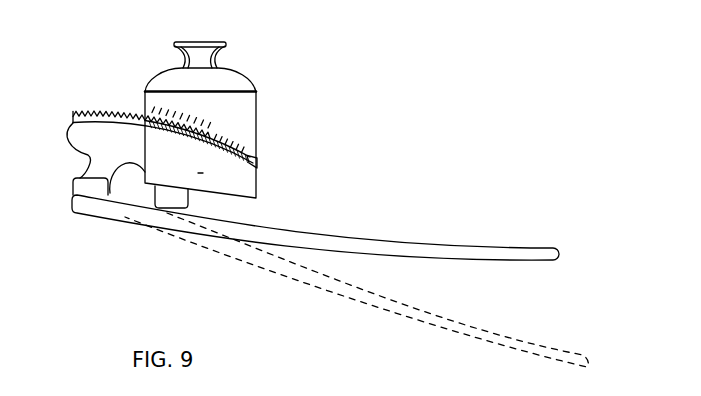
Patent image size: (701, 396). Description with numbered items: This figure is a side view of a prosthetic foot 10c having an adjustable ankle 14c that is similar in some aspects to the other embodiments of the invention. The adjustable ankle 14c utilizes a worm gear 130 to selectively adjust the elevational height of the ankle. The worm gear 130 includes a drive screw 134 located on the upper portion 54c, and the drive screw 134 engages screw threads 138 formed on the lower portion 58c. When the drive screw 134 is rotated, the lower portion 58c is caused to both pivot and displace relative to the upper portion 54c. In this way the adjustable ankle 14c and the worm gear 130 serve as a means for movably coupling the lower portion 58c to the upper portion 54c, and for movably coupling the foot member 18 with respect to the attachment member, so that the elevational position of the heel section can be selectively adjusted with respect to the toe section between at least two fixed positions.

The prosthetic foot 10c is at (308, 200).
The adjustable ankle 14c is at (110, 87).
The foot member 18 is at (365, 240).
The upper portion 54c is at (258, 111).
The lower portion 58c is at (90, 152).
The worm gear 130 is at (258, 152).
The drive screw 134 is at (143, 107).
The screw threads 138 is at (97, 110).